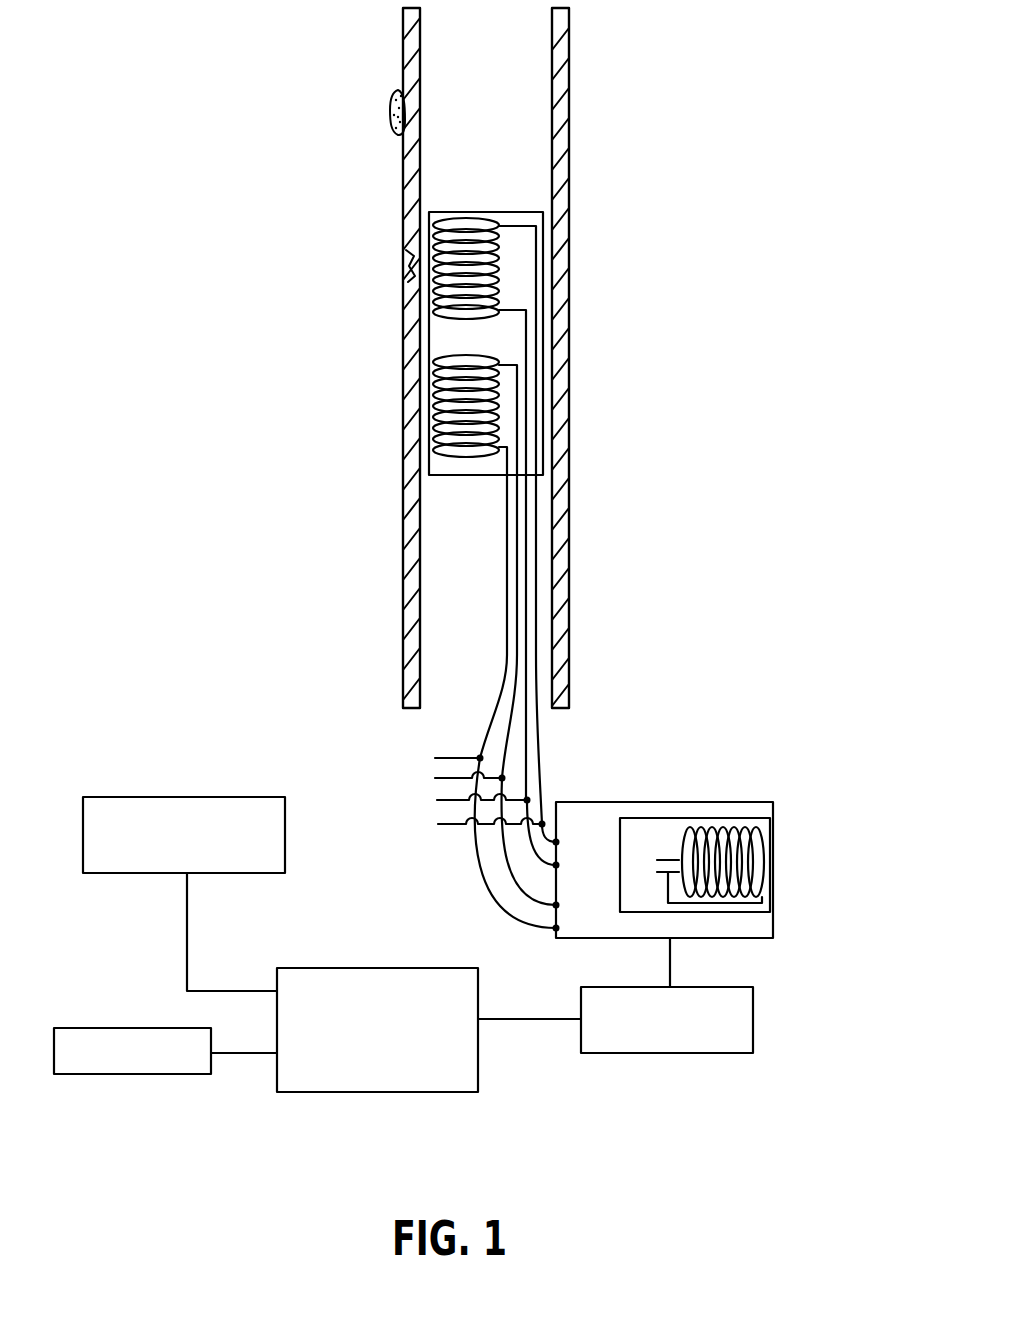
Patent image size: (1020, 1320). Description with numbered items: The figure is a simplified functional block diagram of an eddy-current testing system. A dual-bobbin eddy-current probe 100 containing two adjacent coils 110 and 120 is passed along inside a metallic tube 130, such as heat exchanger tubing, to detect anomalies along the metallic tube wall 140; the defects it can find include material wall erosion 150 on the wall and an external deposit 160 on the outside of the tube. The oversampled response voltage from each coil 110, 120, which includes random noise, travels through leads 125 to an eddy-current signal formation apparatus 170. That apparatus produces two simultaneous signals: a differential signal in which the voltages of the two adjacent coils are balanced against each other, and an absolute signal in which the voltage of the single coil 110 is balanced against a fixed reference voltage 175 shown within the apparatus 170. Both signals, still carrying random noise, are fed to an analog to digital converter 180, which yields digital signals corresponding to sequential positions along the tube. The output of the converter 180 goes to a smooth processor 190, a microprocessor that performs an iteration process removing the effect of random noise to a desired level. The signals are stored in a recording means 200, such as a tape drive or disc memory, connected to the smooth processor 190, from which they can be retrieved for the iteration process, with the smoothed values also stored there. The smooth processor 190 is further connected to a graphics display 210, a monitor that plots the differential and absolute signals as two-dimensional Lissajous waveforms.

The dual-bobbin eddy-current probe 100 is at (455, 478).
The coil 110 is at (497, 272).
The coil 120 is at (438, 410).
The leads 125 is at (435, 758).
The metallic tube 130 is at (570, 178).
The metallic tube wall 140 is at (413, 370).
The material wall erosion 150 is at (404, 265).
The external deposit 160 is at (392, 108).
The eddy-current signal formation apparatus 170 is at (650, 802).
The fixed reference voltage 175 is at (753, 848).
The analog to digital converter 180 is at (753, 1020).
The smooth processor 190 is at (478, 1073).
The recording means 200 is at (125, 1075).
The graphics display 210 is at (137, 797).